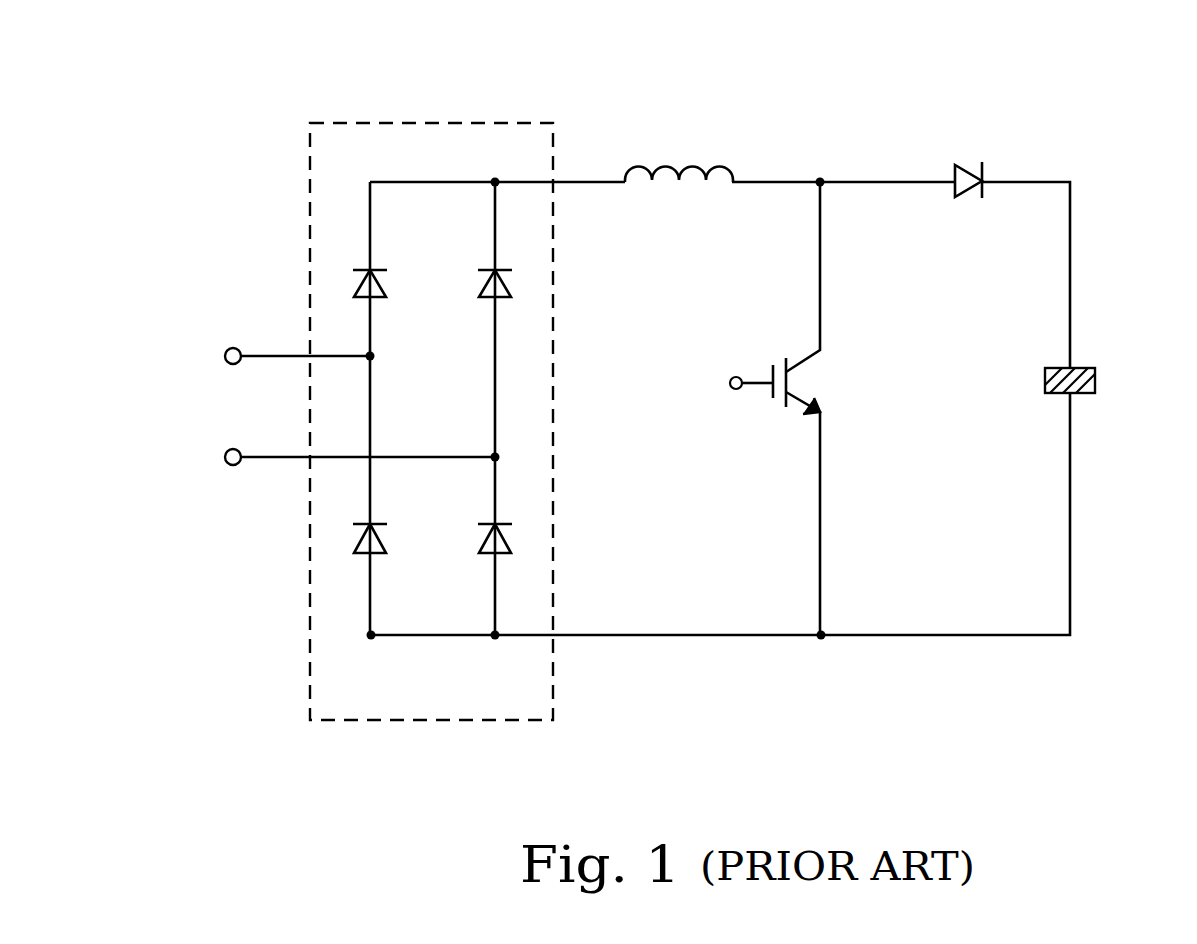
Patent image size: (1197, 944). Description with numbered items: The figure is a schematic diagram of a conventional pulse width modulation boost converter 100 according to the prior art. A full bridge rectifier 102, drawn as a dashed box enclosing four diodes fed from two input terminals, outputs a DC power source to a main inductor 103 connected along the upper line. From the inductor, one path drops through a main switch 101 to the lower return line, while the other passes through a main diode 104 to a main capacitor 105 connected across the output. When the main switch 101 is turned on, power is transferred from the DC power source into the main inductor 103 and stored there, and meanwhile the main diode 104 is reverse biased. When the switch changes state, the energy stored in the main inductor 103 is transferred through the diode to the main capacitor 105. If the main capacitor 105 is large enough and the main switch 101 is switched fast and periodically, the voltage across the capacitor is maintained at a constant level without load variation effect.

The pulse width modulation (PWM) boost converter 100 is at (270, 120).
The main switch 101 is at (797, 408).
The full bridge rectifier 102 is at (464, 122).
The main inductor 103 is at (679, 151).
The main diode 104 is at (967, 158).
The main capacitor 105 is at (1102, 379).